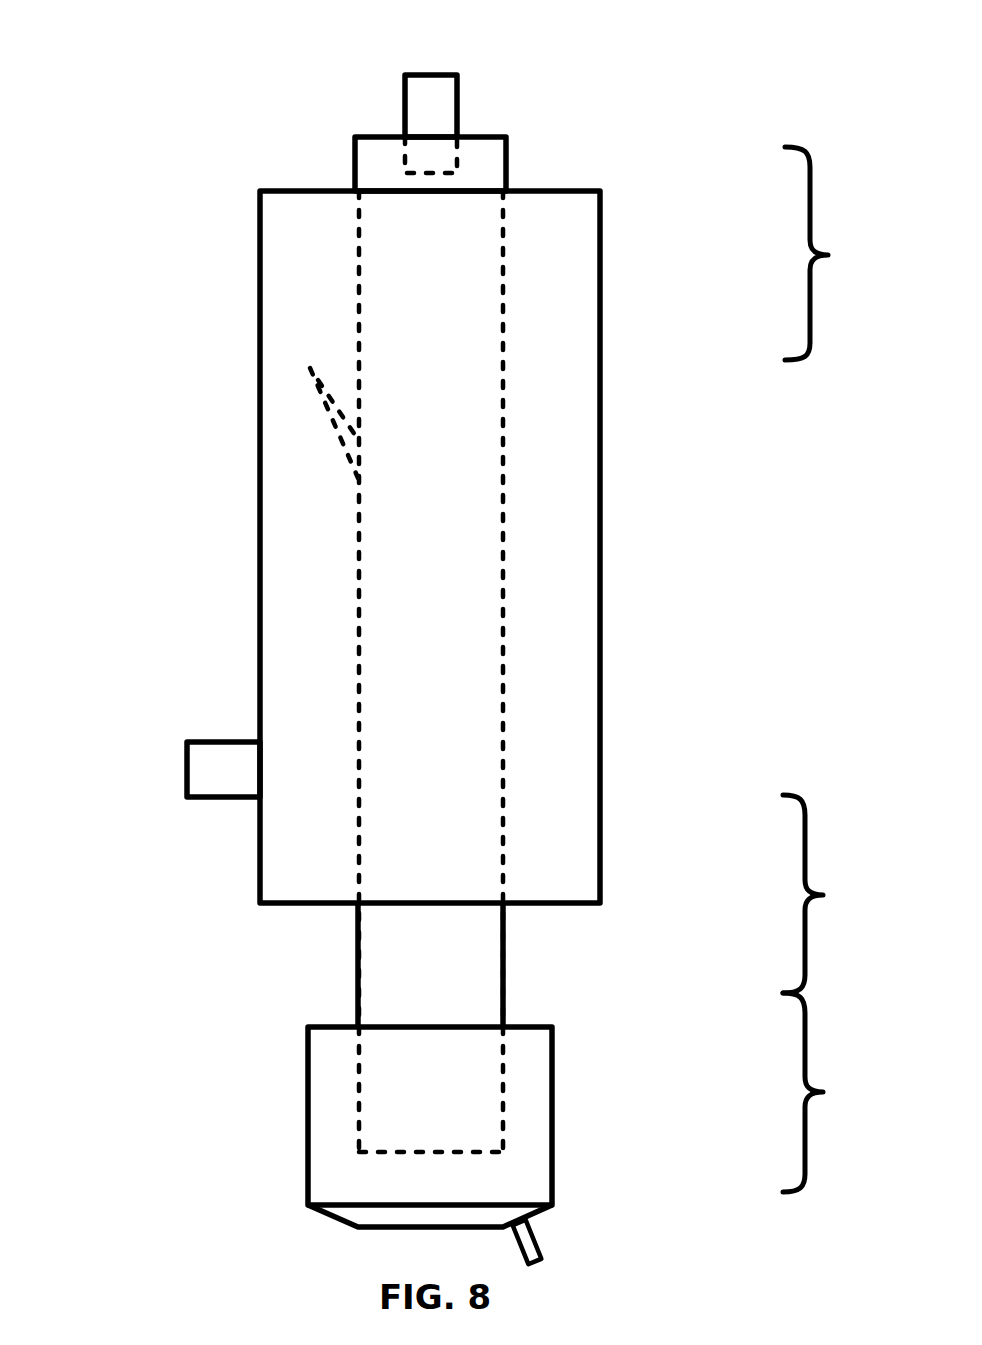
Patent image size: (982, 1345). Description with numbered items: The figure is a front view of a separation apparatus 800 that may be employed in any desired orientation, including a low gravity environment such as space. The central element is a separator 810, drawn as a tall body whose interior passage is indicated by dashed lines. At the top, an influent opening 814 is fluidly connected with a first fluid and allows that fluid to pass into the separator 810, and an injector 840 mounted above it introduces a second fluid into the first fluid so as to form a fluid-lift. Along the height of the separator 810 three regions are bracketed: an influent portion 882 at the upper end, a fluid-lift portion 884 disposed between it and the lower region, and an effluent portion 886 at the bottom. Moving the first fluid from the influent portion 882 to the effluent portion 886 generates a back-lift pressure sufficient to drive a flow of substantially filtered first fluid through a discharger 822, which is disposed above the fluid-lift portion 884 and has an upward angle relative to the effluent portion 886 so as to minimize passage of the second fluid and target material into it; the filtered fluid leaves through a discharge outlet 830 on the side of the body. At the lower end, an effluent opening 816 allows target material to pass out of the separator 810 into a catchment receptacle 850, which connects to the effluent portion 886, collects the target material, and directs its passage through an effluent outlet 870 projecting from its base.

The apparatus 800 is at (96, 56).
The separator 810 is at (360, 348).
The influent opening 814 is at (385, 137).
The effluent opening 816 is at (358, 1120).
The discharger 822 is at (330, 403).
The discharge outlet 830 is at (202, 782).
The injector 840 is at (440, 120).
The catchment receptacle 850 is at (323, 1045).
The effluent outlet 870 is at (523, 1238).
The influent portion 882 is at (836, 253).
The fluid-lift portion 884 is at (833, 894).
The effluent portion 886 is at (833, 1092).